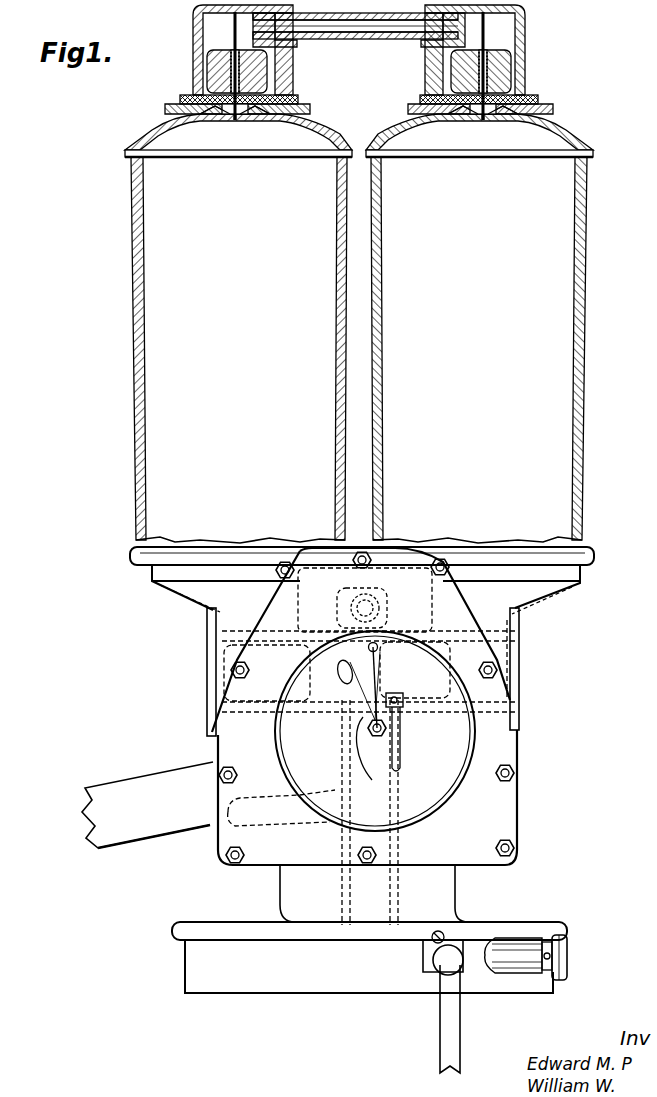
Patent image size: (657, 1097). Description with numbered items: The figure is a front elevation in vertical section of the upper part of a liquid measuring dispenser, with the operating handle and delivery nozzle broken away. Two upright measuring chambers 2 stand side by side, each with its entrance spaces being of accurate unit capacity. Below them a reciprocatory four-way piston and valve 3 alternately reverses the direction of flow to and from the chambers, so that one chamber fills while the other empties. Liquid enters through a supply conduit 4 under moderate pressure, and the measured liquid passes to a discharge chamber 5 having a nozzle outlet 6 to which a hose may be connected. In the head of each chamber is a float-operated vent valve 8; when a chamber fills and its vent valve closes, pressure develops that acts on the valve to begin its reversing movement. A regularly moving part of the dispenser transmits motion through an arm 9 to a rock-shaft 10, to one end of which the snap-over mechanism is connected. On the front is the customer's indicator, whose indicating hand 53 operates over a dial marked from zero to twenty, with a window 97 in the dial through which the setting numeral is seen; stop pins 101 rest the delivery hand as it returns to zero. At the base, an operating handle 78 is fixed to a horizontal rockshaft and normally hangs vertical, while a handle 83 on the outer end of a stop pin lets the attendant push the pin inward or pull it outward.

The measuring chamber 2 is at (359, 274).
The float-operated vent valve 8 is at (247, 110).
The rock-shaft 10 is at (370, 607).
The supply conduit 4 is at (403, 838).
The four-way piston and valve 3 is at (375, 731).
The indicating hand 53 is at (370, 740).
The arm 9 is at (382, 660).
The window 97 is at (396, 770).
The pin 101 is at (343, 685).
The discharge chamber 5 is at (262, 793).
The nozzle outlet 6 is at (143, 833).
The handle 83 is at (568, 966).
The operating handle 78 is at (455, 1041).